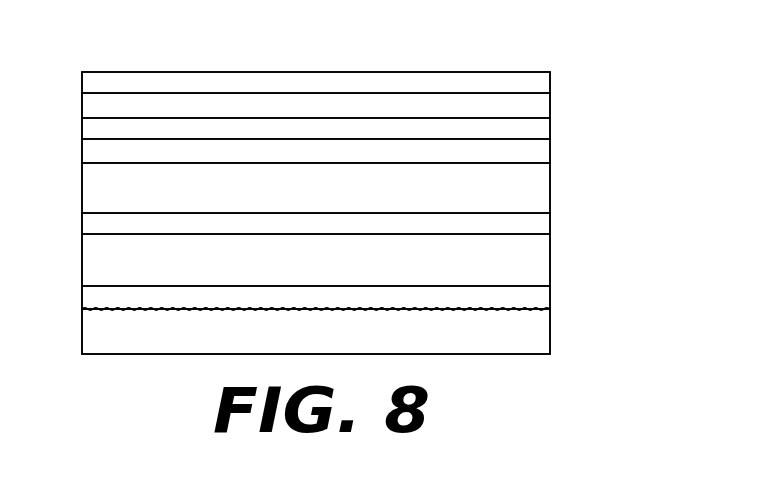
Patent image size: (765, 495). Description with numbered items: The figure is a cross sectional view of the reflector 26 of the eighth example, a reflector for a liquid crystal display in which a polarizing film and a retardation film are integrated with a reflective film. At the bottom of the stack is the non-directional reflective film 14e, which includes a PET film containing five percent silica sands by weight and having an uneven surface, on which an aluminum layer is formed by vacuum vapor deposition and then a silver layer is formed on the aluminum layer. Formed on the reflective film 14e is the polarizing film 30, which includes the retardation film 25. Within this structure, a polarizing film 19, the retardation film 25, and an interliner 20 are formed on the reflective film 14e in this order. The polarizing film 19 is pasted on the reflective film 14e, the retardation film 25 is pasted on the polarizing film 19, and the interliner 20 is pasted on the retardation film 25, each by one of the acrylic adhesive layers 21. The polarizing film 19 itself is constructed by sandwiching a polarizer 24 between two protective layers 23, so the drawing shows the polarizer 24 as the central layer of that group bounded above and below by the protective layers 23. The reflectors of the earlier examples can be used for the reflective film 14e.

The reflector 26 is at (459, 41).
The interliner 20 is at (550, 85).
The acrylic adhesive layer 21 is at (550, 112).
The retardation film 25 is at (550, 132).
The protective layer 23 is at (550, 190).
The polarizer 24 is at (550, 227).
The polarizing film 19 is at (648, 183).
The polarizing film 30 is at (70, 72).
The reflective film 14e is at (550, 333).